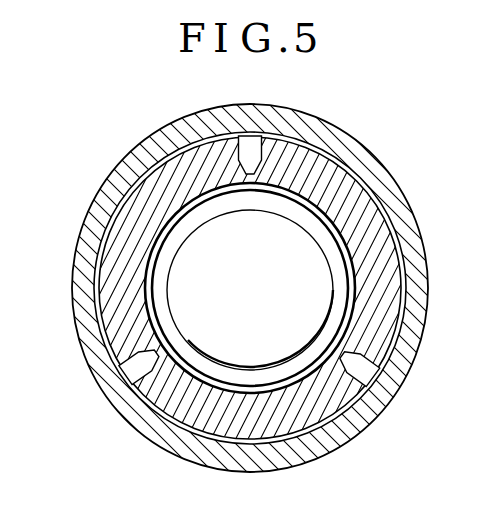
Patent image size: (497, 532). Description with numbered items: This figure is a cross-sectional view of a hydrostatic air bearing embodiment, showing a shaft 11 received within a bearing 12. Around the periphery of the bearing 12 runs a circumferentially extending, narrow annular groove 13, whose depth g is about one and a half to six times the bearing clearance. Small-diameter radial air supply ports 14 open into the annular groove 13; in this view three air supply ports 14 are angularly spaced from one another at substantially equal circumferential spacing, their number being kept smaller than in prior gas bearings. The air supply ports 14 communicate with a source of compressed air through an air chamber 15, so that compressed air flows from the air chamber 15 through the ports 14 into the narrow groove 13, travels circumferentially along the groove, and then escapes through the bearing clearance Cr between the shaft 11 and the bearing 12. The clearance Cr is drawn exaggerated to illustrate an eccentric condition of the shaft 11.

The shaft 11 is at (335, 188).
The bearing 12 is at (292, 240).
The annular groove 13 is at (172, 218).
The air supply port 14 is at (150, 349).
The air chamber 15 is at (393, 229).
The bearing clearance Cr is at (166, 300).
The groove depth g is at (278, 176).